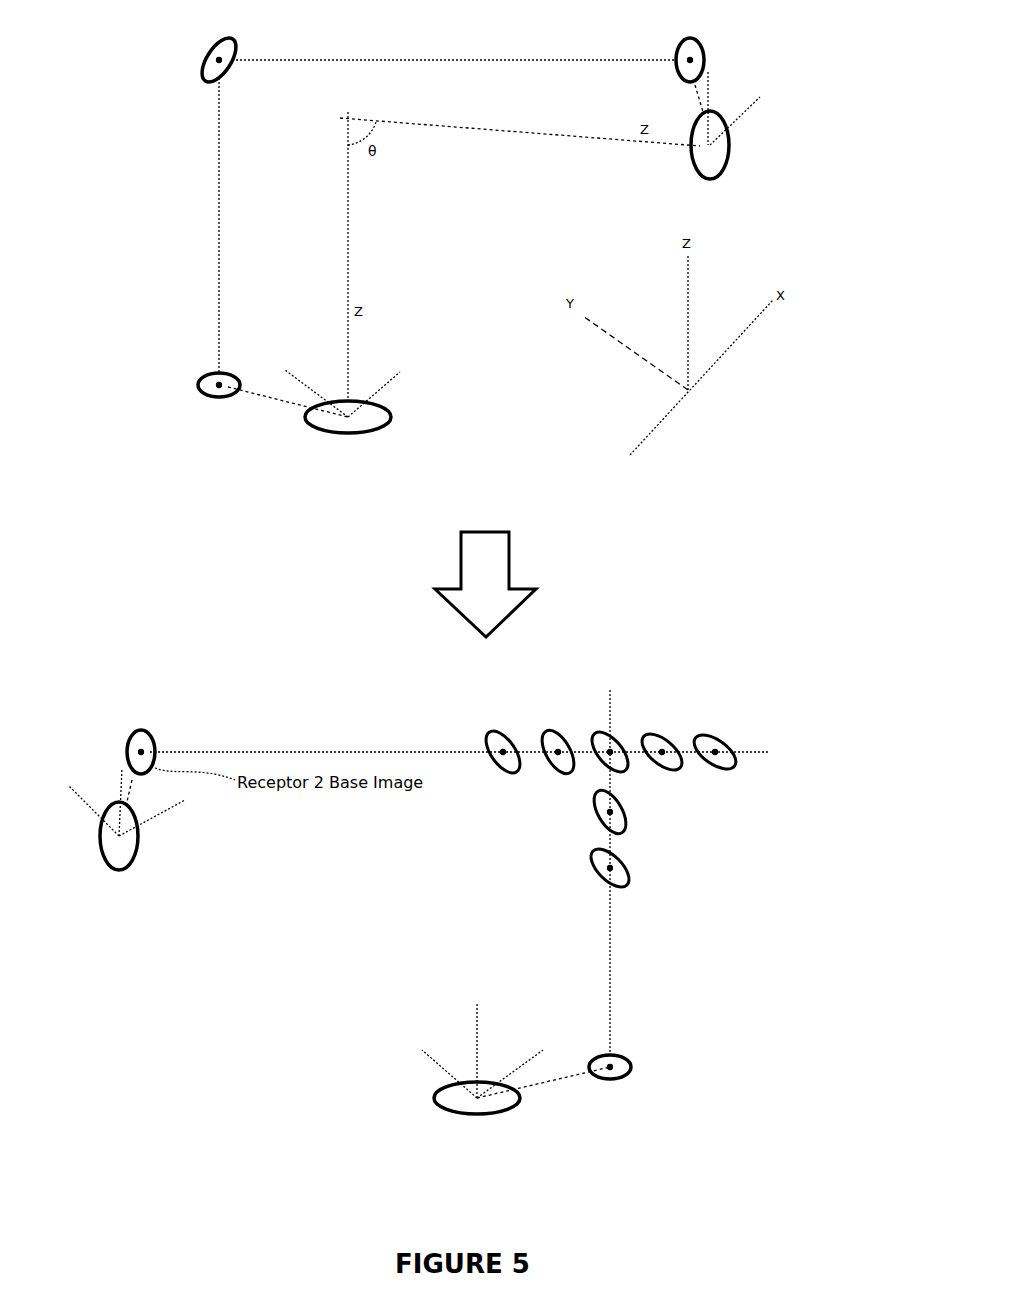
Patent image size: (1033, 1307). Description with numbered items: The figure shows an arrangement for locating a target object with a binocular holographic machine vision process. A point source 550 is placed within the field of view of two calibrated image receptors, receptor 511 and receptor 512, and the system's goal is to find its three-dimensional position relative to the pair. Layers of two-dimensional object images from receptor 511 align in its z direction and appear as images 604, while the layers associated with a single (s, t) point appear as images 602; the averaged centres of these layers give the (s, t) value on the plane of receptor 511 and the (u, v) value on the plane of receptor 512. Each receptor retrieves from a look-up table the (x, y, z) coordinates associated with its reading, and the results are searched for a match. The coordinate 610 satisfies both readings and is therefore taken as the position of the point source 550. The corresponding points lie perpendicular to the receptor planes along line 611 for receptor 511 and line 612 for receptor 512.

The point source 550 is at (404, 189).
The image receptor 512 is at (438, 485).
The image receptor 511 is at (508, 763).
The line 612 is at (460, 720).
The line 611 is at (660, 872).
The images 604 is at (566, 726).
The images 602 is at (522, 843).
The (x, y, z) coordinate 610 is at (612, 742).